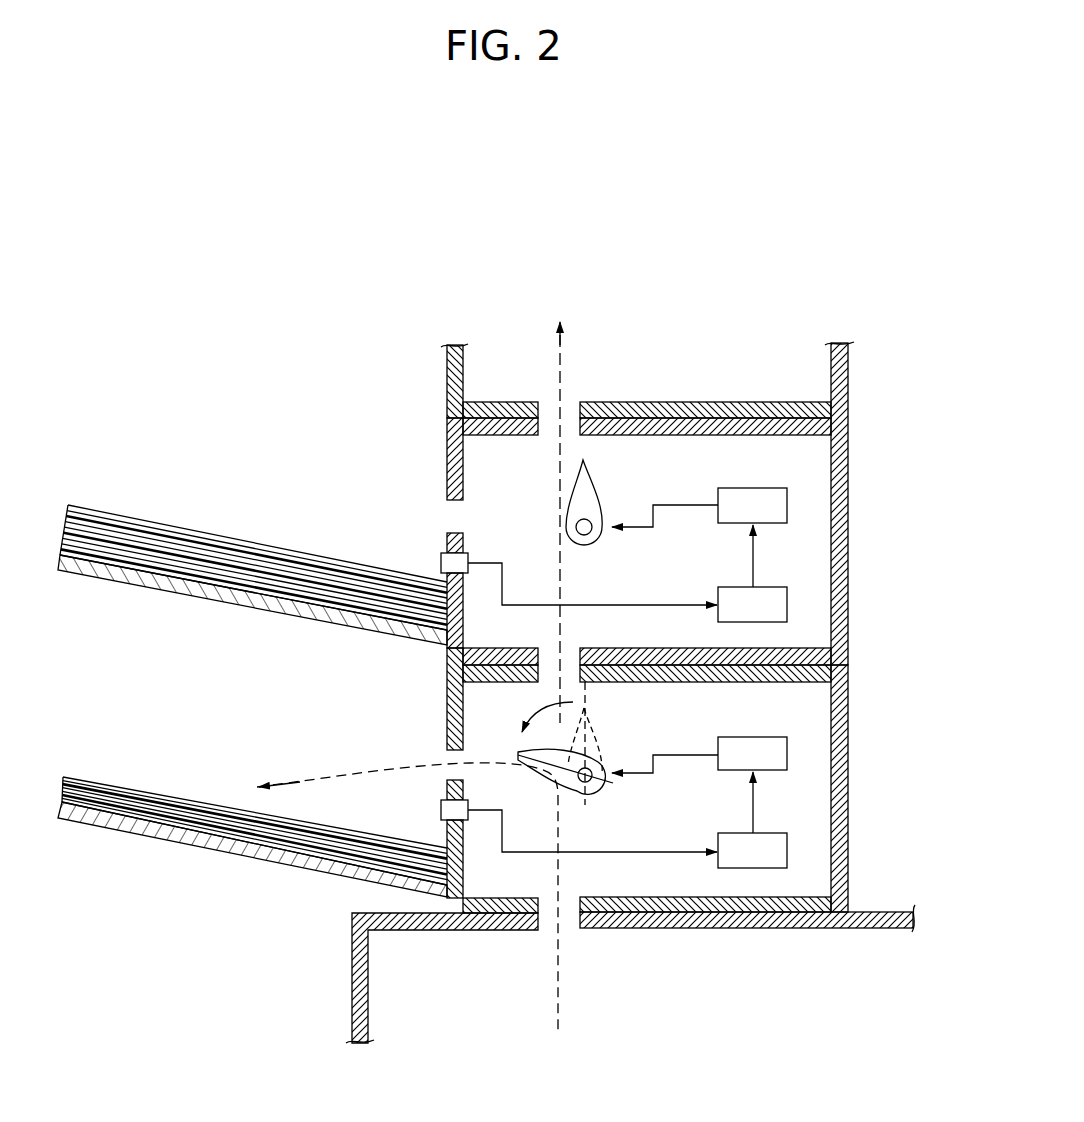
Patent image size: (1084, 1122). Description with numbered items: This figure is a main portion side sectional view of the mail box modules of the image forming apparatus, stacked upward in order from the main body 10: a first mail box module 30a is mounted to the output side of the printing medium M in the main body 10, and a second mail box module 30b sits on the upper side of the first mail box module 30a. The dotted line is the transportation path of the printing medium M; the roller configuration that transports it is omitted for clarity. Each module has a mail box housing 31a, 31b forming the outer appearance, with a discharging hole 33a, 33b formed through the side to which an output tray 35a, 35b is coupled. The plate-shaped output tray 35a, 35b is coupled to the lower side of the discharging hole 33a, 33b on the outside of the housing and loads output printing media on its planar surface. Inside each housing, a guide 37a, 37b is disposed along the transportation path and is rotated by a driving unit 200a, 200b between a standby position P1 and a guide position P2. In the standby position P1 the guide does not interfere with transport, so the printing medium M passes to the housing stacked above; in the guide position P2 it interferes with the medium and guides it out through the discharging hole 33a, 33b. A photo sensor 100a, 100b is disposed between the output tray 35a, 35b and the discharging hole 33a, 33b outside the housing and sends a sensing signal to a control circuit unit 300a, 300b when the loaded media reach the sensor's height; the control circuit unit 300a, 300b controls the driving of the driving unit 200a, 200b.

The main body 10 is at (333, 982).
The first mail box module 30a is at (402, 680).
The second mail box module 30b is at (402, 432).
The mail box housing 31a is at (848, 793).
The mail box housing 31b is at (848, 545).
The discharging hole 33a is at (445, 750).
The discharging hole 33b is at (445, 503).
The output tray 35a is at (122, 825).
The output tray 35b is at (122, 580).
The guide 37a is at (555, 775).
The guide 37b is at (583, 460).
The sensor 100a is at (441, 812).
The sensor 100b is at (441, 560).
The driving unit 200a is at (787, 748).
The driving unit 200b is at (787, 500).
The control circuit unit 300a is at (787, 845).
The control circuit unit 300b is at (787, 600).
The printing medium M is at (96, 507).
The standby position P1 is at (583, 648).
The guide position P2 is at (520, 756).